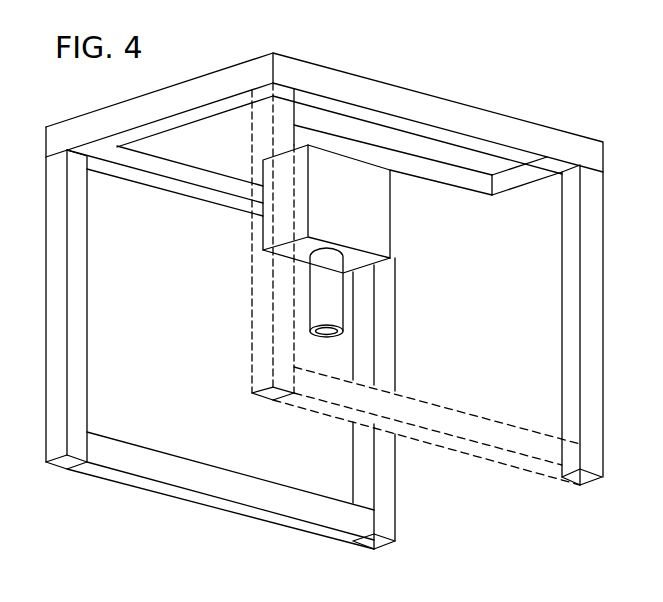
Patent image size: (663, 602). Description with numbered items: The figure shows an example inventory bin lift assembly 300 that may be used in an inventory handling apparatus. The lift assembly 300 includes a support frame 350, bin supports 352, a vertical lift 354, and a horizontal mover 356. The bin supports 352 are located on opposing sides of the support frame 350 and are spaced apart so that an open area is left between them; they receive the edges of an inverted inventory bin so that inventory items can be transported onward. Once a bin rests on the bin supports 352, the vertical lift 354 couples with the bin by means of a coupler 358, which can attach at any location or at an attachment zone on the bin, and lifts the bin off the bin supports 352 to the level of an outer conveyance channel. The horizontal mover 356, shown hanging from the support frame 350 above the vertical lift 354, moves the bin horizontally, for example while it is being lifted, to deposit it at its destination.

The inventory bin lift assembly 300 is at (475, 82).
The support frame 350 is at (518, 125).
The bin supports 352 is at (113, 443).
The vertical lift 354 is at (337, 297).
The horizontal mover 356 is at (364, 209).
The coupler 358 is at (327, 334).